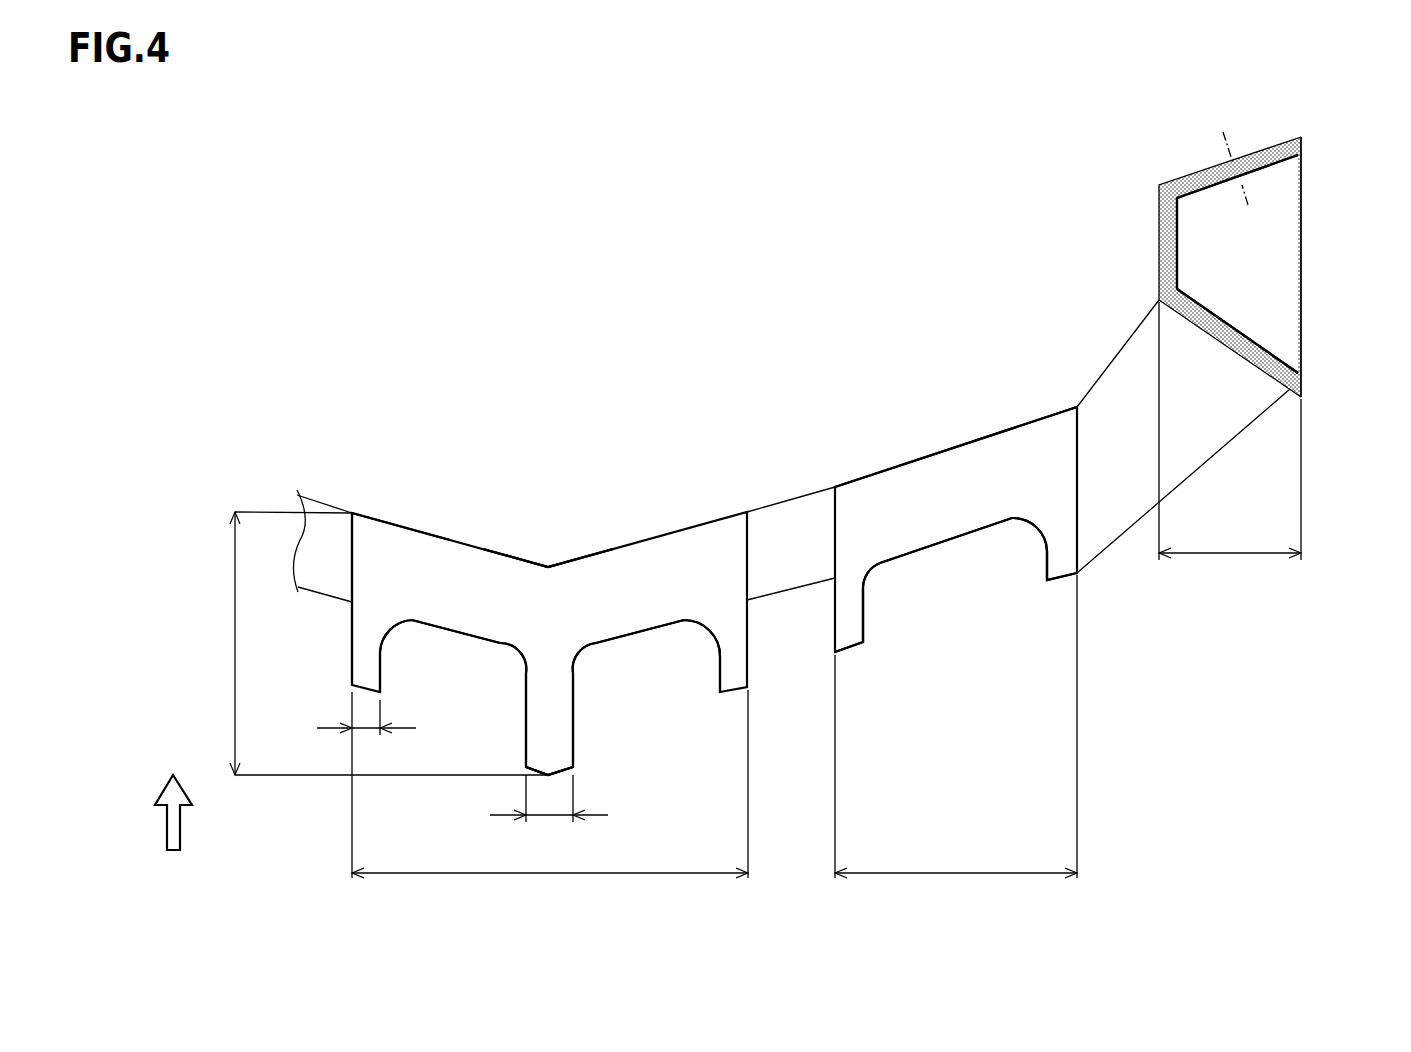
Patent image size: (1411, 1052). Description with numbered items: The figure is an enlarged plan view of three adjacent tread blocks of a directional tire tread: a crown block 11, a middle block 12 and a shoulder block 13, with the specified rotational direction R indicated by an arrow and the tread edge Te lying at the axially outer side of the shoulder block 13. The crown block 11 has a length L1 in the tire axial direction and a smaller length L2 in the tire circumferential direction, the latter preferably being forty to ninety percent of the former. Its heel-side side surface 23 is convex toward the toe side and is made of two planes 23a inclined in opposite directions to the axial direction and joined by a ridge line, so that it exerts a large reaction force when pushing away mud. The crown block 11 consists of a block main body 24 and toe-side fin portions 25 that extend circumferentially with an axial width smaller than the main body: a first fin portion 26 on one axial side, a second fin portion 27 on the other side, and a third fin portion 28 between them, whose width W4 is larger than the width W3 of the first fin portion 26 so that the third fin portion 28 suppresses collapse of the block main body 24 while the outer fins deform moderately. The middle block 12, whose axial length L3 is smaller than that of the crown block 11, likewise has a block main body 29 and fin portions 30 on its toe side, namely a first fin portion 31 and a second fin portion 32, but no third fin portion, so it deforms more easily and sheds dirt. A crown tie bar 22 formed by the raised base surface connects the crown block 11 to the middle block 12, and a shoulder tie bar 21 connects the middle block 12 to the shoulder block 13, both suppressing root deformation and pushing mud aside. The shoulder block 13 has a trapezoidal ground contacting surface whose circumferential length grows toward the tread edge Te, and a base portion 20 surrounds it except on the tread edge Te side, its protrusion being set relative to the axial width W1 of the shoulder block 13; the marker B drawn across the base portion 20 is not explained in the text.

The crown block 11 is at (662, 573).
The middle block 12 is at (953, 498).
The shoulder block 13 is at (1250, 255).
The base portion 20 is at (1170, 237).
The shoulder tie bar 21 is at (1128, 402).
The crown tie bar 22 is at (788, 540).
The side surface 23 is at (617, 458).
The plane 23a is at (483, 547).
The block main body 24 is at (423, 572).
The fin portion 25 is at (552, 733).
The first fin portion 26 is at (365, 667).
The second fin portion 27 is at (733, 662).
The third fin portion 28 is at (553, 758).
The block main body 29 is at (912, 507).
The fin portion 30 is at (852, 617).
The first fin portion 31 is at (847, 632).
The second fin portion 32 is at (1060, 553).
The tread edge Te is at (1301, 190).
The section line B is at (1223, 132).
The width of shoulder block W1 is at (1230, 447).
The width of first fin portion W3 is at (366, 785).
The width of third fin portion W4 is at (549, 812).
The length in tire axial direction of crown block L1 is at (550, 799).
The length in tire circumferential direction of crown block L2 is at (369, 643).
The length in tire axial direction of middle block L3 is at (956, 741).
The rotational direction R is at (173, 796).